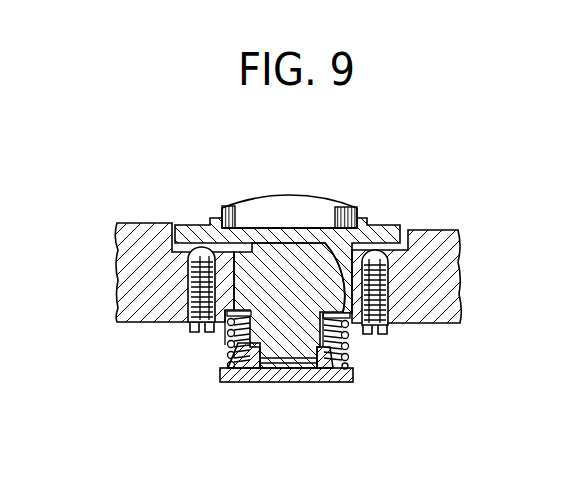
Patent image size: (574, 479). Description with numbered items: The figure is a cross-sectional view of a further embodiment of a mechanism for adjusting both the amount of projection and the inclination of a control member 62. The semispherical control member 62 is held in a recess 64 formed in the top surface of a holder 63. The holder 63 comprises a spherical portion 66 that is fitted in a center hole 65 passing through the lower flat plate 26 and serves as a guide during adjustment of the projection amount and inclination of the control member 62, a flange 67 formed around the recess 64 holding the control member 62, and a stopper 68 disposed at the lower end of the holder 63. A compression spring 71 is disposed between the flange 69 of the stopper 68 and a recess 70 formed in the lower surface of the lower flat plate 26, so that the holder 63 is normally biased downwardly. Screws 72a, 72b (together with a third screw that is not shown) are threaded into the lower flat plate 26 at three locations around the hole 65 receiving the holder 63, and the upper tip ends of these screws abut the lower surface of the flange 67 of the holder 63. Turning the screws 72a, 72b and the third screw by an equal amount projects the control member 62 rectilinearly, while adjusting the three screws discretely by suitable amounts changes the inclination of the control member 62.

The lower flat plate 26 is at (128, 290).
The control member 62 is at (283, 206).
The holder 63 is at (307, 234).
The recess 64 is at (233, 204).
The center hole 65 is at (332, 246).
The spherical portion 66 is at (237, 241).
The flange 67 is at (390, 244).
The stopper 68 is at (261, 383).
The flange of the stopper 69 is at (343, 383).
The recess 70 is at (234, 298).
The compression spring 71 is at (350, 344).
The screw 72a is at (191, 333).
The screw 72b is at (387, 334).